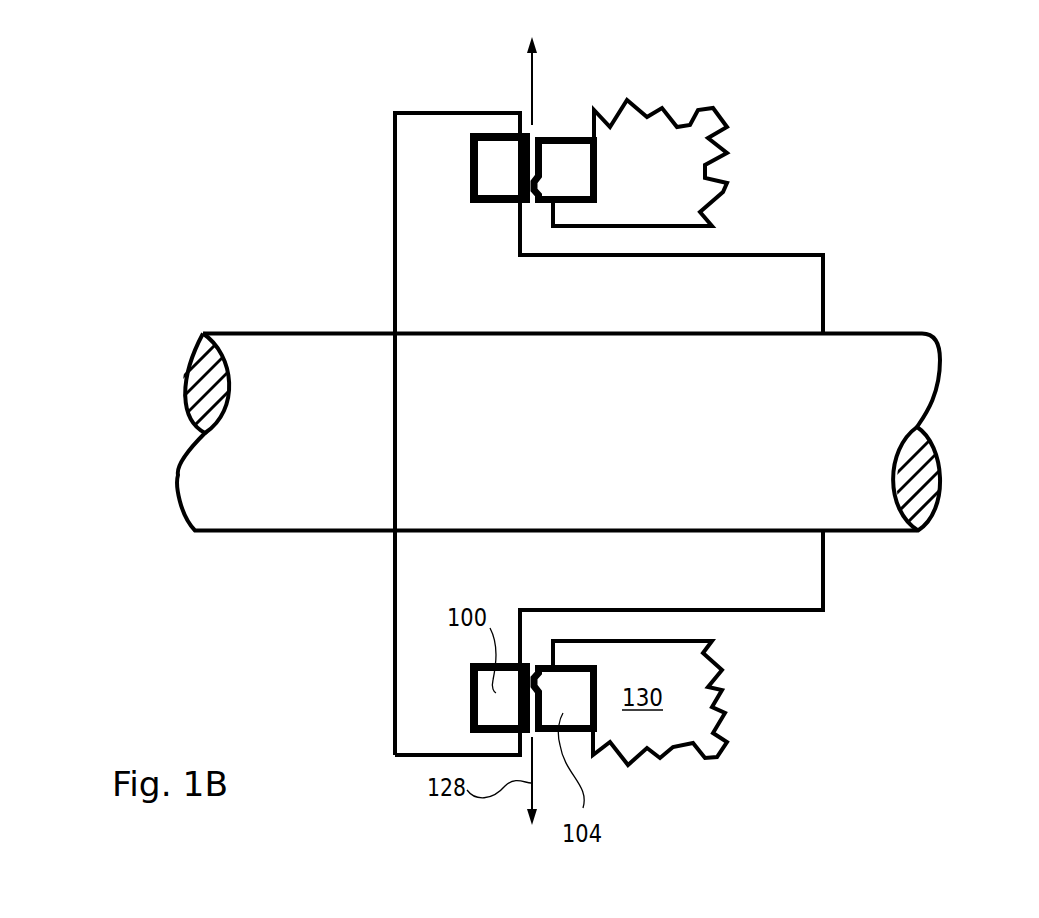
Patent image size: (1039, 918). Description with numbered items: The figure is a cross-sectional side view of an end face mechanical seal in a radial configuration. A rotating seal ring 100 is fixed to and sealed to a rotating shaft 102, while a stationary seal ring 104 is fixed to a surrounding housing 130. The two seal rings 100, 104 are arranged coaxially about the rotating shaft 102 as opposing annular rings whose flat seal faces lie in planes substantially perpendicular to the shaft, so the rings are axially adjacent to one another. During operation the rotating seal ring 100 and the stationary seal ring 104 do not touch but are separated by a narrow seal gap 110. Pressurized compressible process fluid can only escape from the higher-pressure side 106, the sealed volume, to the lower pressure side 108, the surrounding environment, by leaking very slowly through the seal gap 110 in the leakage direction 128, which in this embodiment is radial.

The rotating seal ring 100 is at (472, 199).
The rotating shaft 102 is at (540, 443).
The stationary seal ring 104 is at (560, 152).
The higher-pressure side 106 is at (965, 254).
The lower pressure side 108 is at (288, 48).
The seal gap 110 is at (532, 162).
The leakage direction 128 is at (531, 58).
The housing 130 is at (667, 172).